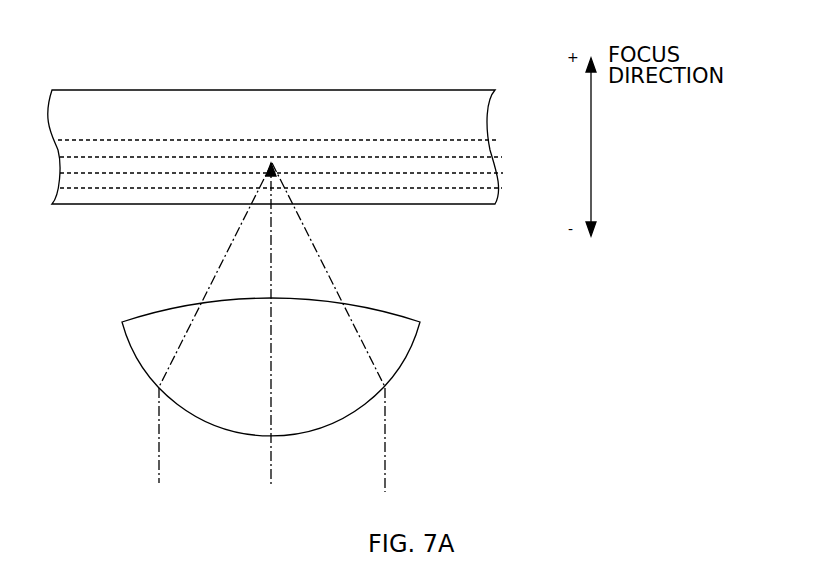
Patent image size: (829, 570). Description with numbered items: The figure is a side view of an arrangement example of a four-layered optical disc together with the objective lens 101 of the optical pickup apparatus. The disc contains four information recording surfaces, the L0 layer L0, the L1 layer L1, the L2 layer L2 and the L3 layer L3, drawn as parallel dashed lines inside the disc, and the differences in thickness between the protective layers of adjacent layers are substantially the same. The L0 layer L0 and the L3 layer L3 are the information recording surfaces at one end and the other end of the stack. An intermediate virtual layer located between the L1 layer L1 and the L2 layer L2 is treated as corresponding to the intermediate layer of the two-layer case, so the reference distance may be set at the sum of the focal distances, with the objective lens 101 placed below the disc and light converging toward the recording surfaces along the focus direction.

The L0 layer L0 is at (500, 139).
The L1 layer L1 is at (505, 155).
The L2 layer L2 is at (506, 172).
The L3 layer L3 is at (506, 188).
The objective lens 101 is at (400, 368).